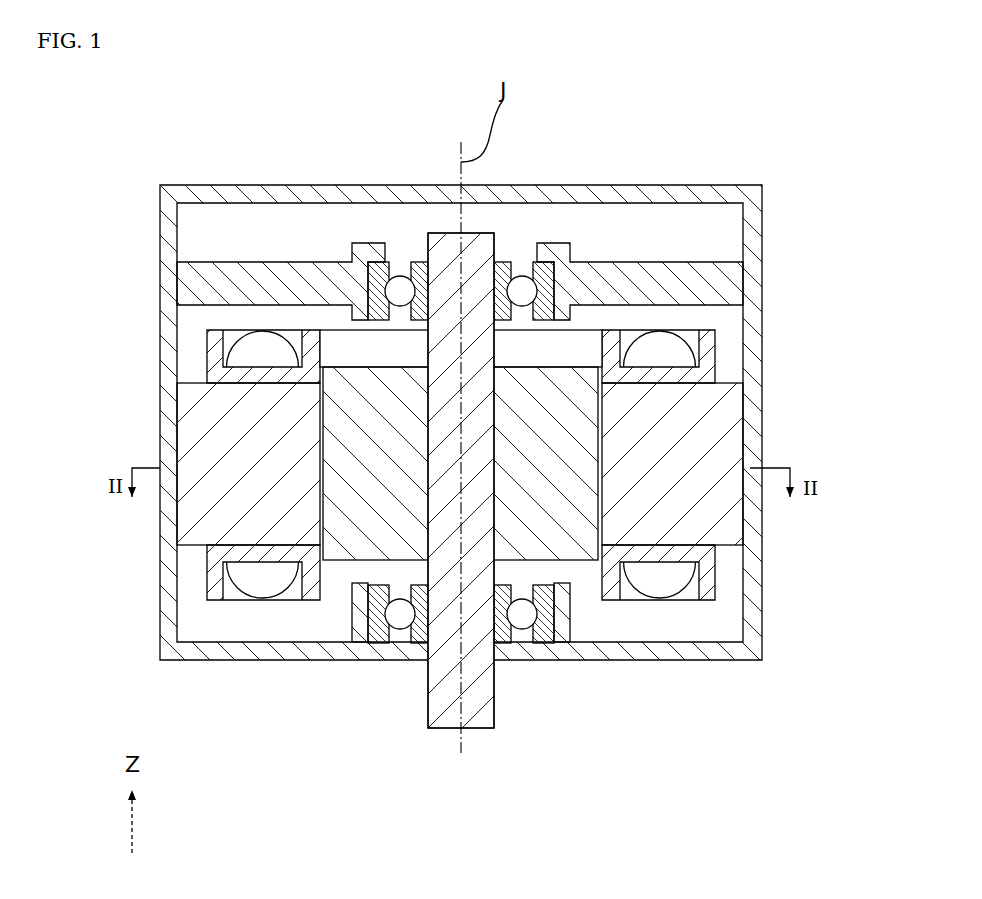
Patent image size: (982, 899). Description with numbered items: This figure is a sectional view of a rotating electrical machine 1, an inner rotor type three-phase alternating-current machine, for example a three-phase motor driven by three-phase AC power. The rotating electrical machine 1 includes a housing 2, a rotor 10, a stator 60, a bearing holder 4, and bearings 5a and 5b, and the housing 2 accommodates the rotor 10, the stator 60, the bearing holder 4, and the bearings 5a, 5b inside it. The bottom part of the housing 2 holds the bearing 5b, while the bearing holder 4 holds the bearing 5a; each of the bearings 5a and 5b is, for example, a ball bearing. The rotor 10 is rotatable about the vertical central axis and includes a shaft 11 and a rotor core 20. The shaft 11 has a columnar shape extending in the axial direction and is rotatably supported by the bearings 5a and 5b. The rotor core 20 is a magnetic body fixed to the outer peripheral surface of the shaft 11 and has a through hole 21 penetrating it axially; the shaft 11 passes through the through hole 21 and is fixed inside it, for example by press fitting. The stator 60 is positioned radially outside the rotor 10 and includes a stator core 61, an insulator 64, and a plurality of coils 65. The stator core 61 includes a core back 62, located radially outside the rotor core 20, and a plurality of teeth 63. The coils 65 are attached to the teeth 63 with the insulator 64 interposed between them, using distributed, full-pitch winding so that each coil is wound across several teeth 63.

The rotating electrical machine 1 is at (703, 84).
The housing 2 is at (644, 195).
The bearing holder 4 is at (605, 270).
The bearing 5a is at (400, 286).
The bearing 5b is at (400, 625).
The rotor 10 is at (586, 582).
The shaft 11 is at (490, 698).
The rotor core 20 is at (341, 580).
The through hole 21 is at (493, 512).
The stator 60 is at (740, 375).
The stator core 61 is at (847, 423).
The core back 62 is at (733, 518).
The teeth 63 is at (682, 430).
The insulator 64 is at (712, 347).
The coils 65 is at (668, 348).